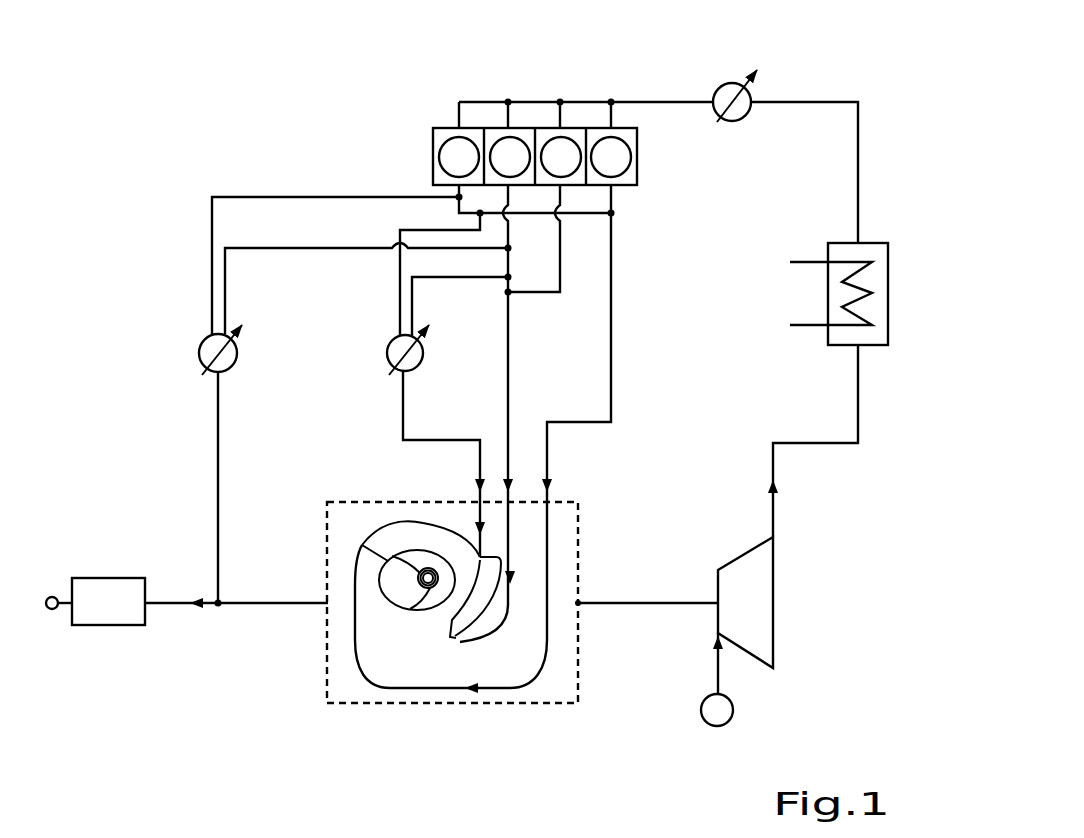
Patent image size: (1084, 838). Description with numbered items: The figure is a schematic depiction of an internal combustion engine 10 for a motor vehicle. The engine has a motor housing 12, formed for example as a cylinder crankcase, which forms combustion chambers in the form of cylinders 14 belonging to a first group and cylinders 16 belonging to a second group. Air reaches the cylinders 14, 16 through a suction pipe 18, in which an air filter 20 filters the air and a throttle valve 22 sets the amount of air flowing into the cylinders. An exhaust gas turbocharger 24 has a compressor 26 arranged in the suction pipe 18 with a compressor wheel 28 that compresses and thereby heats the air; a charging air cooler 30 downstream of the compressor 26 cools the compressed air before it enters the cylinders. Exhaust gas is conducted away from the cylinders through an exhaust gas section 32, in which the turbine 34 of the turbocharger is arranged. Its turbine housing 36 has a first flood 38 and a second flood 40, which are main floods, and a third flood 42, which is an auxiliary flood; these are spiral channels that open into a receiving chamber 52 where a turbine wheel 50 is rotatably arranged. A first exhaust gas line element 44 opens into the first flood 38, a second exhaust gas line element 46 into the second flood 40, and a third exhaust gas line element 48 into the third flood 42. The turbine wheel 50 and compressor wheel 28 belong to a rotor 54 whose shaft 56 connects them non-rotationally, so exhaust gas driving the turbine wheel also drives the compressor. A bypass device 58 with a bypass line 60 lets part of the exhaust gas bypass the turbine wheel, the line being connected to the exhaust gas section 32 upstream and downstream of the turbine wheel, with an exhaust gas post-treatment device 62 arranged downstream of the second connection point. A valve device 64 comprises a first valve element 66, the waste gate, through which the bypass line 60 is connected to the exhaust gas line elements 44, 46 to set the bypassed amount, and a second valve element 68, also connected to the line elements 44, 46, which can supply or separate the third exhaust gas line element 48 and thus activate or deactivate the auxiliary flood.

The internal combustion engine 10 is at (216, 130).
The motor housing 12 is at (637, 146).
The cylinders 14 is at (462, 138).
The cylinders 16 is at (510, 138).
The suction pipe 18 is at (737, 733).
The air filter 20 is at (733, 710).
The throttle valve 22 is at (752, 110).
The exhaust gas turbocharger 24 is at (795, 579).
The compressor 26 is at (789, 536).
The compressor wheel 28 is at (747, 557).
The charging air cooler 30 is at (888, 290).
The exhaust gas section 32 is at (467, 714).
The turbine 34 is at (357, 714).
The turbine housing 36 is at (327, 658).
The first flood 38 is at (392, 540).
The second flood 40 is at (458, 645).
The third flood 42 is at (476, 556).
The first exhaust gas line element 44 is at (611, 283).
The second exhaust gas line element 46 is at (508, 335).
The third exhaust gas line element 48 is at (403, 400).
The turbine wheel 50 is at (417, 593).
The receiving chamber 52 is at (416, 577).
The rotor 54 is at (652, 640).
The shaft 56 is at (667, 600).
The bypass device 58 is at (153, 270).
The bypass line 60 is at (217, 468).
The exhaust gas post-treatment device 62 is at (107, 625).
The valve device 64 is at (150, 400).
The first valve element 66 is at (199, 350).
The second valve element 68 is at (428, 357).